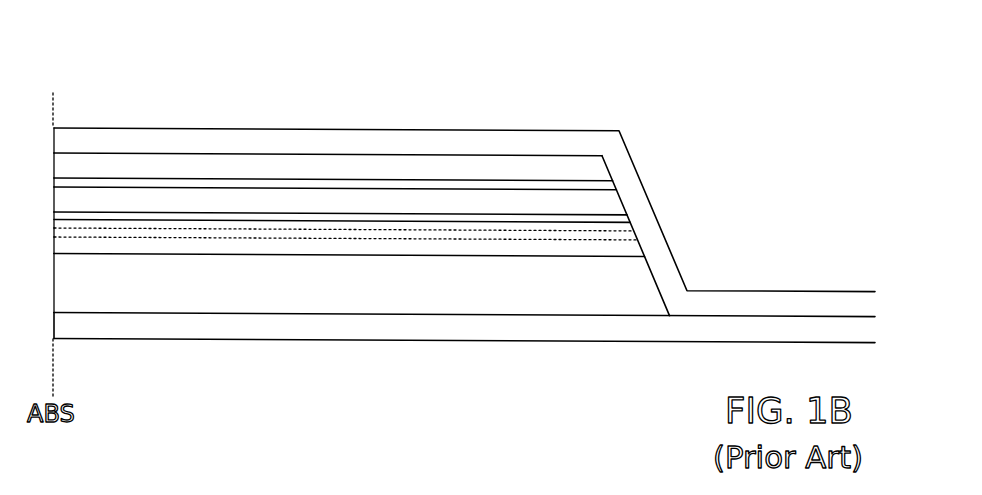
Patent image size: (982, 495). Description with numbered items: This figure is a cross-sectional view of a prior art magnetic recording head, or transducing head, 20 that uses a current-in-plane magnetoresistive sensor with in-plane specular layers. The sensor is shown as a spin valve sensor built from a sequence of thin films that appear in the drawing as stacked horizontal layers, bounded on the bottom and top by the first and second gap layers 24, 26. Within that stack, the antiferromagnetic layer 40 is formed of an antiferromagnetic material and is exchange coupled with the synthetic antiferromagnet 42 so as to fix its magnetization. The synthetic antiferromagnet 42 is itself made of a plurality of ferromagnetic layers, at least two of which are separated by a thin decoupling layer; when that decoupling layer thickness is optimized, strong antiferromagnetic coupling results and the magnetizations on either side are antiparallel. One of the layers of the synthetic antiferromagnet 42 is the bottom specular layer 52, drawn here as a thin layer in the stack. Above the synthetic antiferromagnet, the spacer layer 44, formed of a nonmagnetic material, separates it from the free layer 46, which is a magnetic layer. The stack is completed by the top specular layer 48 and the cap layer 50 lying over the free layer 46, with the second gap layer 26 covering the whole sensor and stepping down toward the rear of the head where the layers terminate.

The magnetic recording head 20 is at (847, 70).
The first gap layer 24 is at (277, 322).
The second gap layer 26 is at (343, 147).
The antiferromagnetic layer 40 is at (382, 297).
The synthetic antiferromagnetic 42 is at (452, 243).
The spacer layer 44 is at (567, 218).
The free layer 46 is at (387, 206).
The top specular layer 48 is at (455, 185).
The cap layer 50 is at (533, 164).
The bottom specular layer 52 is at (499, 235).